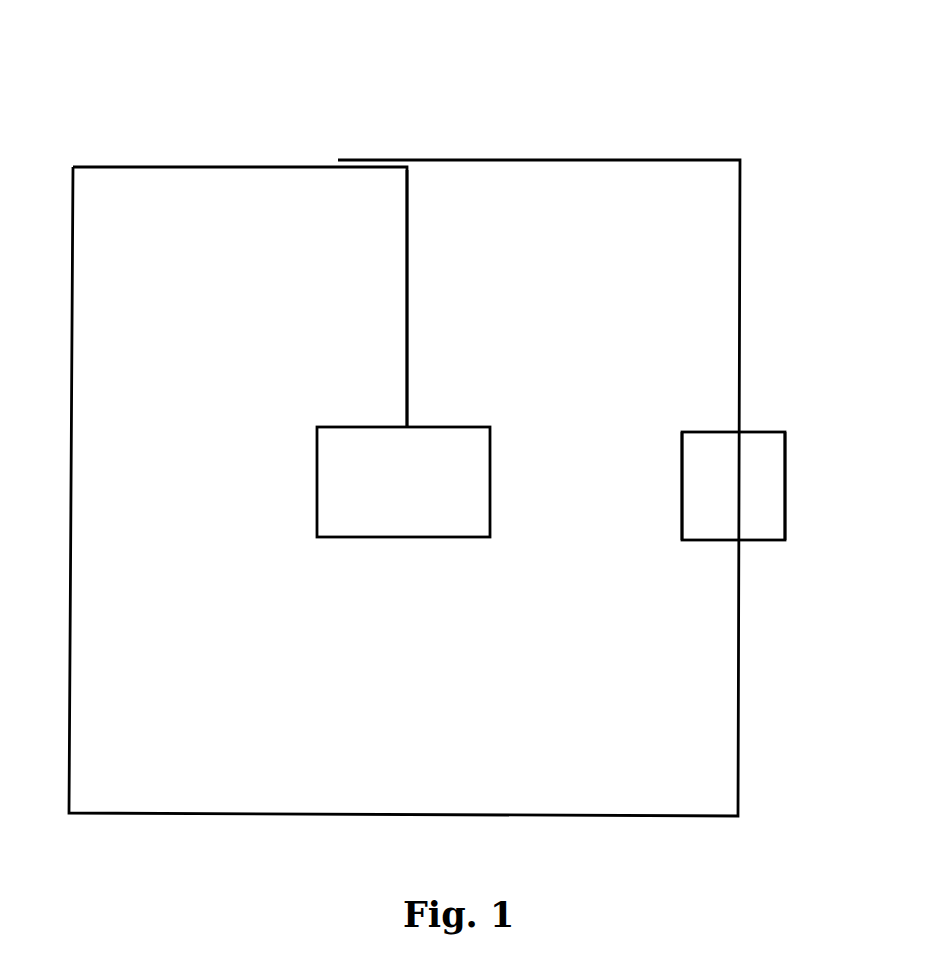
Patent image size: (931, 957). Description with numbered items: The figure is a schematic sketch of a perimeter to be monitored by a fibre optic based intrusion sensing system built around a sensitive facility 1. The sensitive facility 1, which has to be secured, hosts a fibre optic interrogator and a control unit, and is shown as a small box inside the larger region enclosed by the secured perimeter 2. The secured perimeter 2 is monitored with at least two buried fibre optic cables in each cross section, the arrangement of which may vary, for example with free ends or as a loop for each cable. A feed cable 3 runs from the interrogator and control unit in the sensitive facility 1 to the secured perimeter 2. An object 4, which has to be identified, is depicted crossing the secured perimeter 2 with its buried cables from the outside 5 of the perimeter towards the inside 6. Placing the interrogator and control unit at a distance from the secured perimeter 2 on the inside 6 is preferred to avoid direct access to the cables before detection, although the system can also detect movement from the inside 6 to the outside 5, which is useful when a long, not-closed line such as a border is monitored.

The sensitive facility 1 is at (452, 435).
The secured perimeter 2 is at (240, 166).
The feed cable 3 is at (407, 297).
The object 4 is at (755, 455).
The outside 5 is at (785, 572).
The inside 6 is at (683, 572).